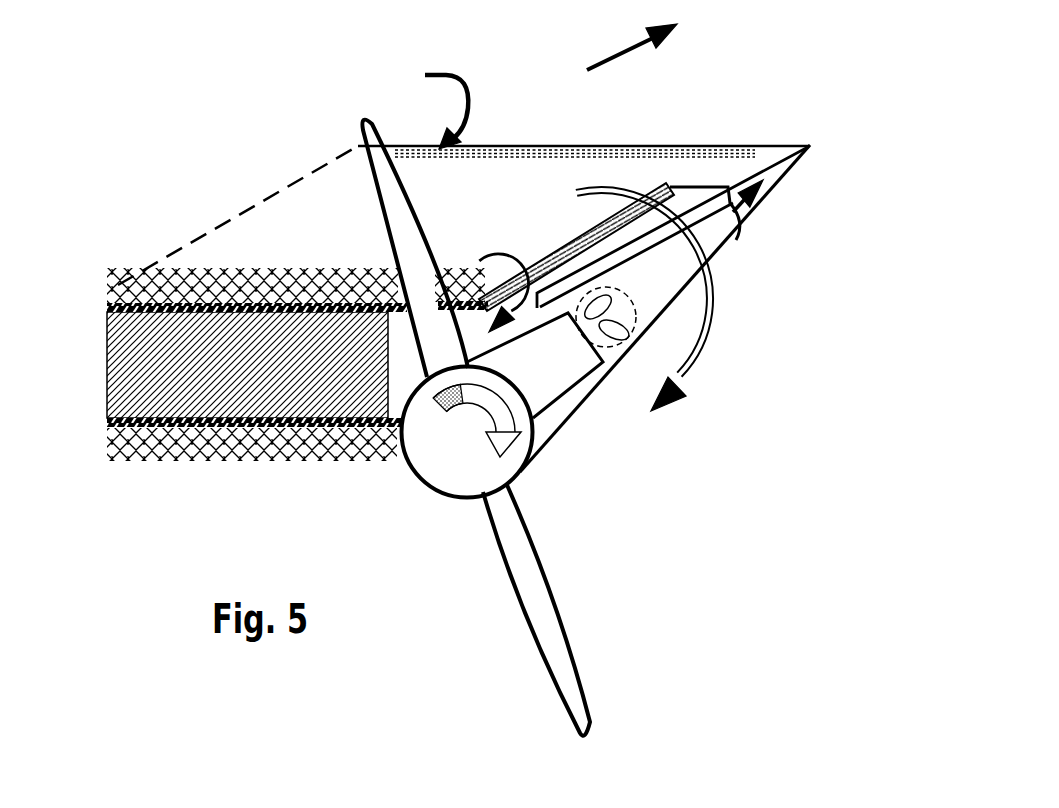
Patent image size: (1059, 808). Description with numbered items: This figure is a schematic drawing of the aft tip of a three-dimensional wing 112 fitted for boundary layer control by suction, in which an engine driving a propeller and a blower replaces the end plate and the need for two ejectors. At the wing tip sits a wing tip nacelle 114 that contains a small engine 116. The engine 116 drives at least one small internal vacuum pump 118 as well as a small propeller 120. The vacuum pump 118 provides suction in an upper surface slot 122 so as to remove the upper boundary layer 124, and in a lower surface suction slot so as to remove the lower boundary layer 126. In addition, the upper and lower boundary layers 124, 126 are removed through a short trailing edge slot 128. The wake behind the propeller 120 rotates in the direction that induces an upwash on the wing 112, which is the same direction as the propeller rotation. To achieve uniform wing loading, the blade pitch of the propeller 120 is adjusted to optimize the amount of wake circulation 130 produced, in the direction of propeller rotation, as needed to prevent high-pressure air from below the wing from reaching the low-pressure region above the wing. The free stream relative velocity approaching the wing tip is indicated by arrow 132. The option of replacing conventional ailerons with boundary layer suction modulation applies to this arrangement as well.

The 3-D wing 112 is at (276, 230).
The wing tip nacelle 114 is at (715, 243).
The small engine 116 is at (537, 383).
The vacuum pump 118 is at (613, 352).
The propeller 120 is at (553, 653).
The upper surface slot 122 is at (687, 200).
The upper boundary layer 124 is at (108, 295).
The lower boundary layer 126 is at (147, 457).
The trailing edge slot 128 is at (556, 148).
The wake circulation 130 is at (700, 318).
The free stream relative velocity 132 is at (657, 40).